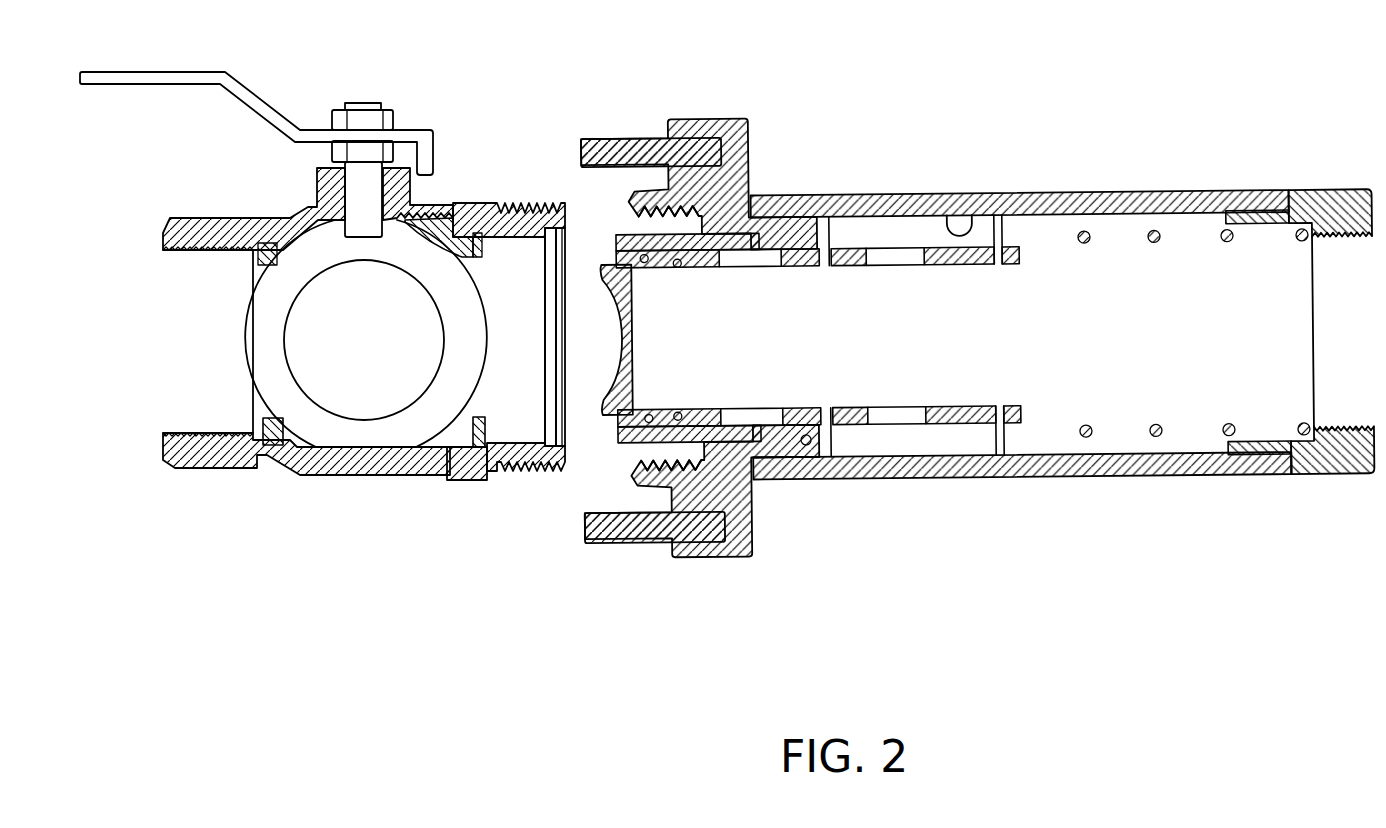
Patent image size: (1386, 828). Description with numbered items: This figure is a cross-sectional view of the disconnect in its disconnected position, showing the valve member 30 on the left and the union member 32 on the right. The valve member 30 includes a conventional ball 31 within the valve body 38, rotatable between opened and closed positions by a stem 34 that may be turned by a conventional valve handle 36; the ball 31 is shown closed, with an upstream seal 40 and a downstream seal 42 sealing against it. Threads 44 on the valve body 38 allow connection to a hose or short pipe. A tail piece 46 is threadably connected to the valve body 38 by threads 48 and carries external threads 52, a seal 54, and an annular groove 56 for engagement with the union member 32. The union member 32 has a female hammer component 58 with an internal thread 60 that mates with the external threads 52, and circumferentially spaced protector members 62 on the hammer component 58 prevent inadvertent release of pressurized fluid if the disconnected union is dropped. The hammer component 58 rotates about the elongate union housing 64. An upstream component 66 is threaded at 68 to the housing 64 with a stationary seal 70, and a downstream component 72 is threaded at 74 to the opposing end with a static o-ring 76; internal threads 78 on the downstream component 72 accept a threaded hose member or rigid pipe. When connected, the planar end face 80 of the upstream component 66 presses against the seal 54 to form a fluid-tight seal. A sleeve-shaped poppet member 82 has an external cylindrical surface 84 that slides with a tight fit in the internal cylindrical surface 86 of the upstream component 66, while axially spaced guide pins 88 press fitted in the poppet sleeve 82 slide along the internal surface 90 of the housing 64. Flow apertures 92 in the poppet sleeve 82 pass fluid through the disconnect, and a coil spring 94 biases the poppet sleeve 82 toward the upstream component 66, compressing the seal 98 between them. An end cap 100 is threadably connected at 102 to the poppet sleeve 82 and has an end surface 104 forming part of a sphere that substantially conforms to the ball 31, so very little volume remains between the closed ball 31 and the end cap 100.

The valve member 30 is at (458, 125).
The ball 31 is at (468, 325).
The union member 32 is at (803, 112).
The stem 34 is at (378, 212).
The valve handle 36 is at (257, 100).
The valve body 38 is at (237, 232).
The upstream seal 40 is at (270, 443).
The downstream seal 42 is at (473, 417).
The threads 44 is at (212, 253).
The tail piece 46 is at (477, 480).
The threads 48 is at (425, 217).
The external threads 52 is at (507, 205).
The seal 54 is at (482, 250).
The annular groove 56 is at (560, 228).
The female hammer component 58 is at (750, 168).
The internal thread 60 is at (653, 216).
The protector members 62 is at (615, 141).
The elongate union housing 64 is at (997, 462).
The upstream component 66 is at (648, 442).
The threads 68 is at (773, 455).
The stationary seal 70 is at (815, 442).
The downstream component 72 is at (1350, 468).
The threads 74 is at (1258, 446).
The static o-ring 76 is at (1288, 457).
The internal threads 78 is at (1338, 246).
The planar end face 80 is at (615, 432).
The poppet member 82 is at (807, 406).
The external diameter cylindrical surface 84 is at (722, 406).
The internal diameter cylindrical surface 86 is at (677, 406).
The guide pins 88 is at (832, 234).
The internal surface 90 is at (972, 233).
The flow apertures 92 is at (747, 268).
The coil spring 94 is at (1085, 246).
The seal 98 is at (645, 411).
The end cap 100 is at (630, 292).
The threaded connection 102 is at (673, 263).
The end surface 104 is at (622, 338).